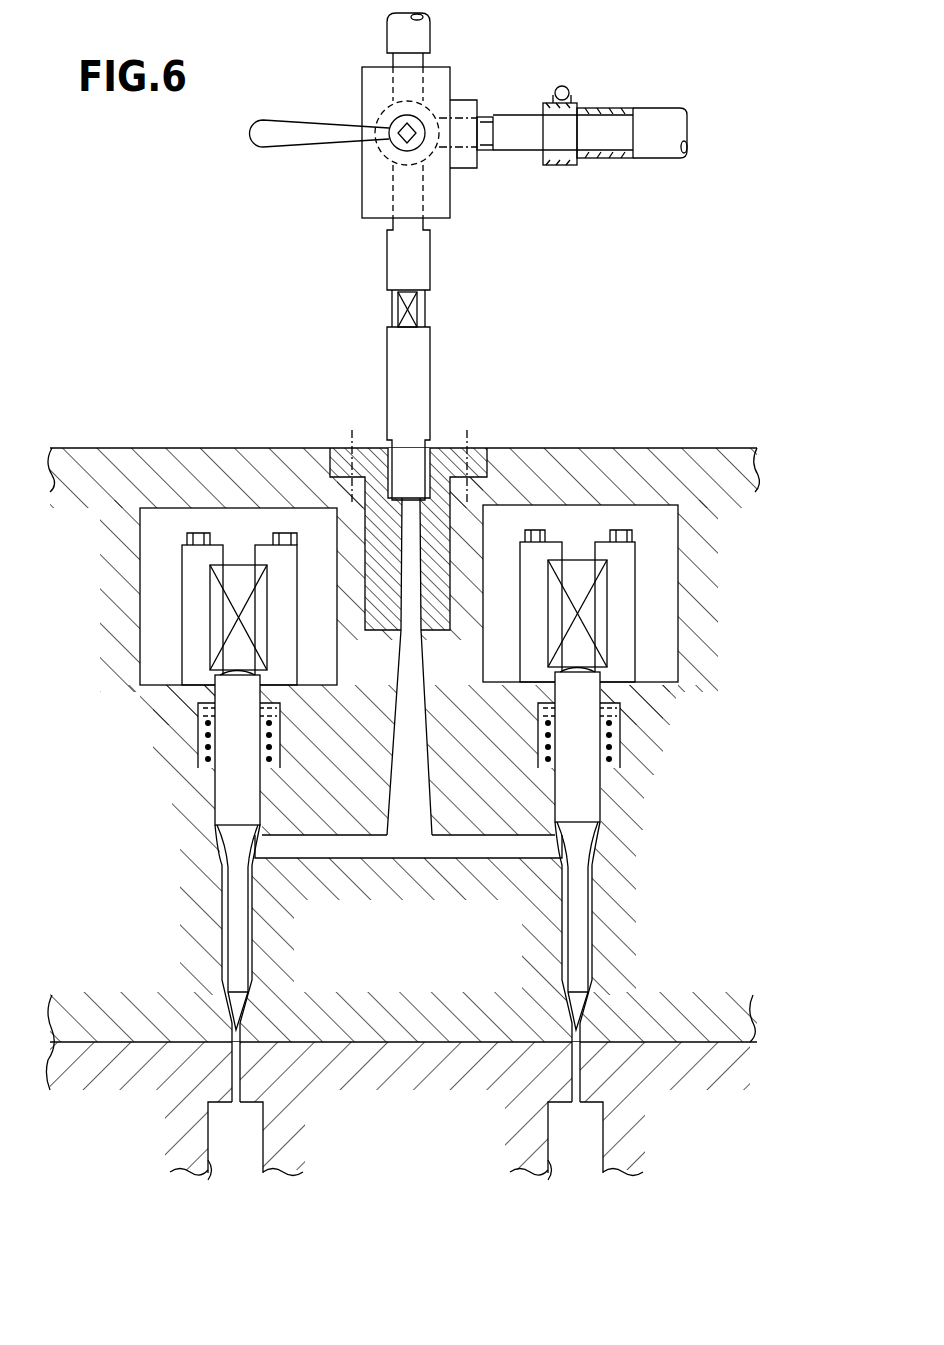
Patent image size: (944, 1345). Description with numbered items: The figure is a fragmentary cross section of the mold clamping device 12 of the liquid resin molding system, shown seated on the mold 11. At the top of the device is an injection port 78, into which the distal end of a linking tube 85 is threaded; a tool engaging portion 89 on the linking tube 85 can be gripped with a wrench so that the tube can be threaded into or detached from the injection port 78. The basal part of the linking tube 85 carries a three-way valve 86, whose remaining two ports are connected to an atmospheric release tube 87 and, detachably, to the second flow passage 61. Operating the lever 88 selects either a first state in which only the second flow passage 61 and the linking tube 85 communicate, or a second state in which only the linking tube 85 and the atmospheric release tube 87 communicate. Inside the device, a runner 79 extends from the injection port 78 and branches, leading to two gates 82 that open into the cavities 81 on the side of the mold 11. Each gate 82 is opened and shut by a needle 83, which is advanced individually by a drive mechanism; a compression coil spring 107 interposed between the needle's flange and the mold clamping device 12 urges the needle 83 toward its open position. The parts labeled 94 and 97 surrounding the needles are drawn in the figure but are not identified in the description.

The mold 11 is at (690, 1140).
The mold clamping device 12 is at (667, 460).
The second flow passage 61 is at (645, 118).
The injection port 78 is at (411, 500).
The runner 79 is at (398, 856).
The cavities 81 is at (212, 1142).
The gates 82 is at (233, 1015).
The needles 83 is at (232, 799).
The linking tube 85 is at (395, 343).
The three-way valve 86 is at (375, 178).
The atmospheric release tube 87 is at (395, 37).
The lever 88 is at (291, 128).
The tool engaging portion 89 is at (430, 315).
The solenoid coil 94 is at (237, 565).
The solenoid core 97 is at (207, 537).
The compression coil spring 107 is at (198, 733).